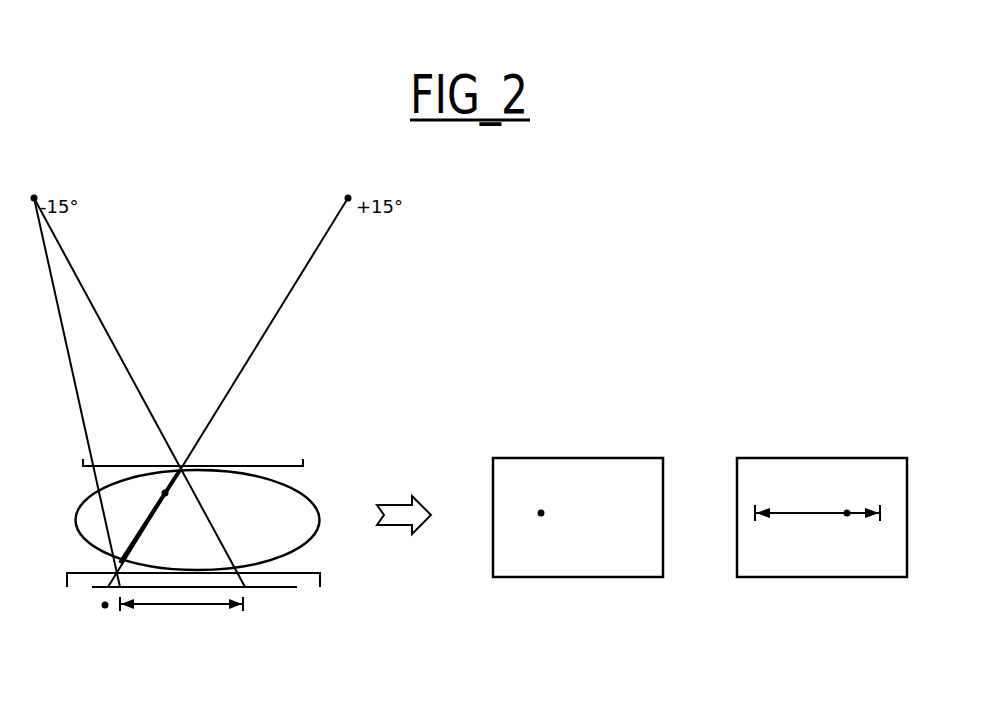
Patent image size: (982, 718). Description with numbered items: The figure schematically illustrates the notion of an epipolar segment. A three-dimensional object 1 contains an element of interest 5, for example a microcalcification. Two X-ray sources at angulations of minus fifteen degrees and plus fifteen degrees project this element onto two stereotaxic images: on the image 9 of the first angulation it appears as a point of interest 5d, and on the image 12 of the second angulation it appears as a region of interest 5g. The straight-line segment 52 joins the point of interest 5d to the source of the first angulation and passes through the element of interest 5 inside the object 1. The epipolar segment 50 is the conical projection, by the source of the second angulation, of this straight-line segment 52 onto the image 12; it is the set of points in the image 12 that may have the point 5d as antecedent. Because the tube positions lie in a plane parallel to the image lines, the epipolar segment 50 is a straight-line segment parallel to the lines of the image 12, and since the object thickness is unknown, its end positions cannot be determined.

The three-dimensional object 1 is at (316, 487).
The element of interest 5 is at (166, 497).
The straight-line segment 52 is at (137, 530).
The point of interest on first image 5d is at (103, 610).
The region of interest on second image 5g is at (848, 520).
The epipolar segment 50 is at (189, 612).
The image of first angulation 9 is at (591, 440).
The image of second angulation 12 is at (820, 434).